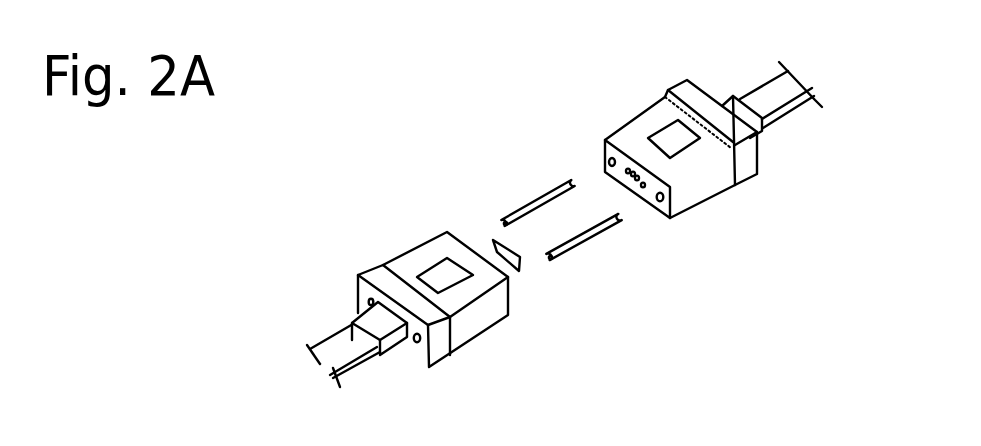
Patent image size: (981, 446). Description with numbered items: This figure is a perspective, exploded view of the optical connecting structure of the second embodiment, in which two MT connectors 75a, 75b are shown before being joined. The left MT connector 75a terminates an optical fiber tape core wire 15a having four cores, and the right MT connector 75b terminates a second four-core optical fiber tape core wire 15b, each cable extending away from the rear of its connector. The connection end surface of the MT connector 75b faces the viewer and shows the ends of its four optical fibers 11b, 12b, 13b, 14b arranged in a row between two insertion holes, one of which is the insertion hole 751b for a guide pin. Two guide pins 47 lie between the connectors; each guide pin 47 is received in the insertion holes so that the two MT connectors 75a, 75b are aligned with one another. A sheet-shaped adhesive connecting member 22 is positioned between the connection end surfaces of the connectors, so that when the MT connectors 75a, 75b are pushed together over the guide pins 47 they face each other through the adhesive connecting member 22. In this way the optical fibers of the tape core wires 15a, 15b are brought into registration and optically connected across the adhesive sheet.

The MT connector 75a is at (413, 248).
The optical fiber tape core wire 15a is at (350, 367).
The guide pin 47 is at (532, 202).
The sheet-shaped adhesive connecting member 22 is at (491, 236).
The MT connector 75b is at (647, 173).
The insertion hole for guide pin 751b is at (603, 153).
The optical fiber 11b is at (628, 171).
The optical fiber 12b is at (633, 174).
The optical fiber 13b is at (637, 178).
The optical fiber 14b is at (638, 186).
The optical fiber tape core wire 15b is at (778, 113).